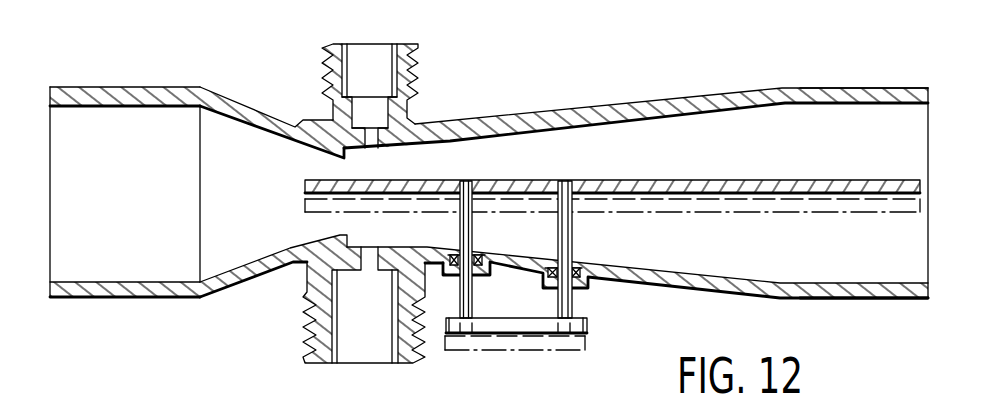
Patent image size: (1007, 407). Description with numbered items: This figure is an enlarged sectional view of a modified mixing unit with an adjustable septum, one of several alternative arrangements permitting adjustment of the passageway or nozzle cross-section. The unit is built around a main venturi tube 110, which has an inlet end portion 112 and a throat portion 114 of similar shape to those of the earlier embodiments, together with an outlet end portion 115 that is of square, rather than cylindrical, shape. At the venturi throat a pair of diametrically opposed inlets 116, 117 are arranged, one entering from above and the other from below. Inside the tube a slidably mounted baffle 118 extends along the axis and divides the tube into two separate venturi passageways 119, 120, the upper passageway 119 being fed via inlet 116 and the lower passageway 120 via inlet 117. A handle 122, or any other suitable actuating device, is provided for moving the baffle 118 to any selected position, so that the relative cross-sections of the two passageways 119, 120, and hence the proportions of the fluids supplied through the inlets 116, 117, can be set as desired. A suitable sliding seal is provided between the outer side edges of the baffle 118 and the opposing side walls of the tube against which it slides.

The main venturi tube 110 is at (551, 102).
The inlet end portion 112 is at (115, 92).
The throat portion 114 is at (395, 162).
The outlet end portion 115 is at (848, 88).
The inlet 116 is at (338, 60).
The inlet 117 is at (310, 325).
The baffle 118 is at (698, 180).
The venturi passageway 119 is at (668, 130).
The venturi passageway 120 is at (758, 260).
The handle 122 is at (512, 325).